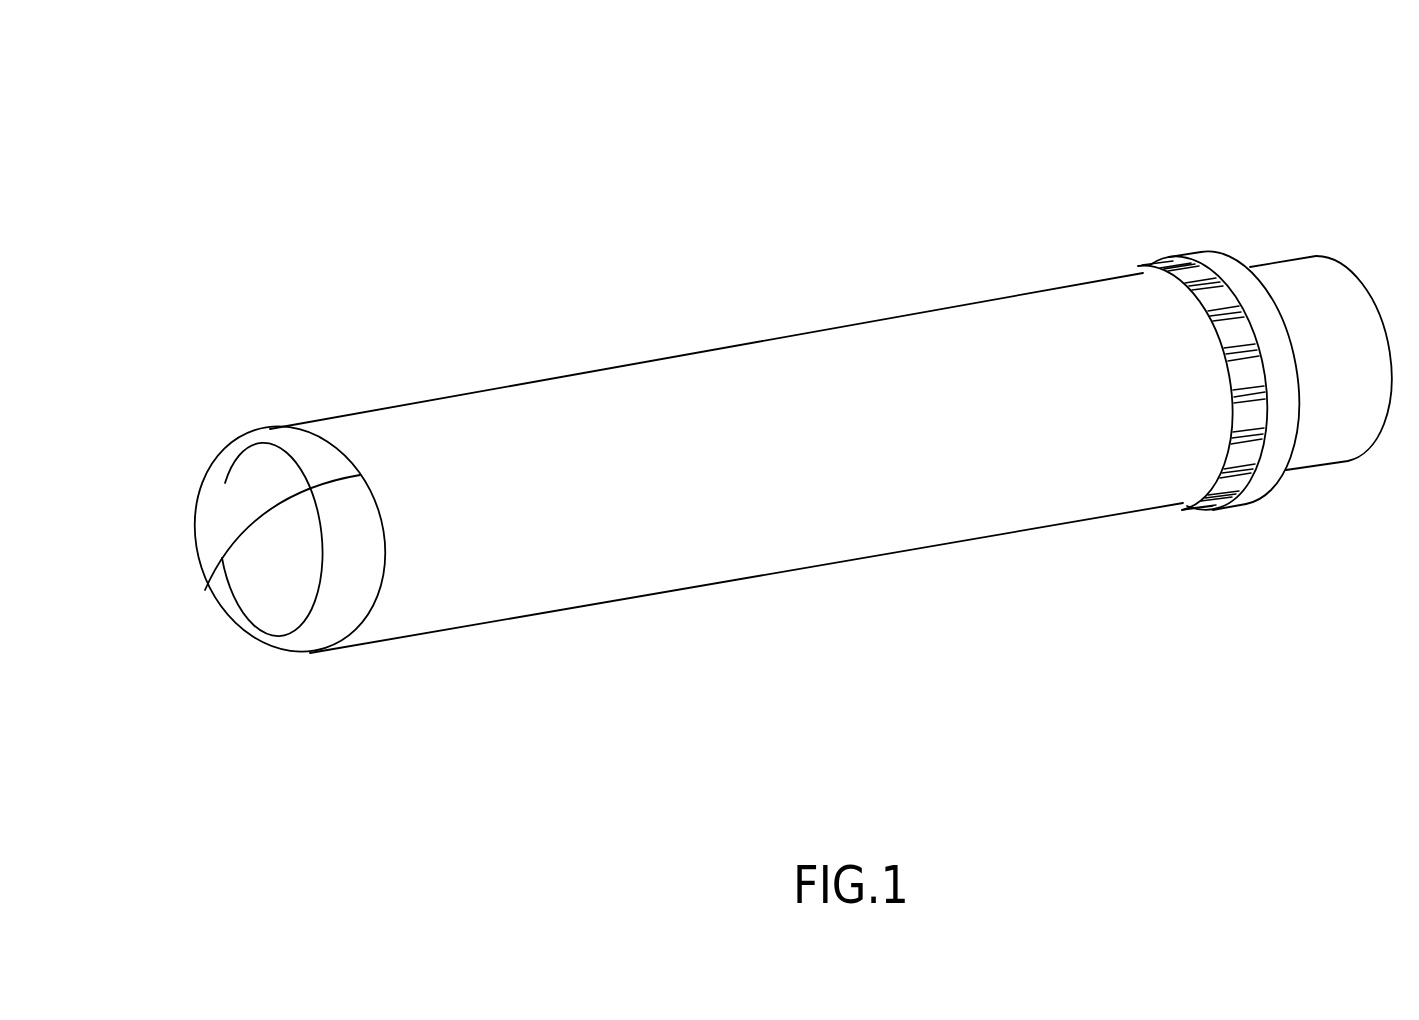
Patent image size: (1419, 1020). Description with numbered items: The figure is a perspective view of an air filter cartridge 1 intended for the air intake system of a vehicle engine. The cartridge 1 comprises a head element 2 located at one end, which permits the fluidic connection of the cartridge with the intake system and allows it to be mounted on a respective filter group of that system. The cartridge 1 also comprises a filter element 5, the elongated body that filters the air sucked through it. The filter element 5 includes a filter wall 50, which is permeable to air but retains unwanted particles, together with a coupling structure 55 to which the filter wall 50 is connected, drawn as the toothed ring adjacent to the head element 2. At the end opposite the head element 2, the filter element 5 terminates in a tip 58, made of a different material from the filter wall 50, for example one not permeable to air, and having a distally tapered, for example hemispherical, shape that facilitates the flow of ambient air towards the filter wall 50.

The air filter cartridge 1 is at (493, 177).
The head element 2 is at (1282, 513).
The filter element 5 is at (430, 648).
The filter wall 50 is at (629, 522).
The coupling structure 55 is at (1137, 263).
The tip 58 is at (233, 512).